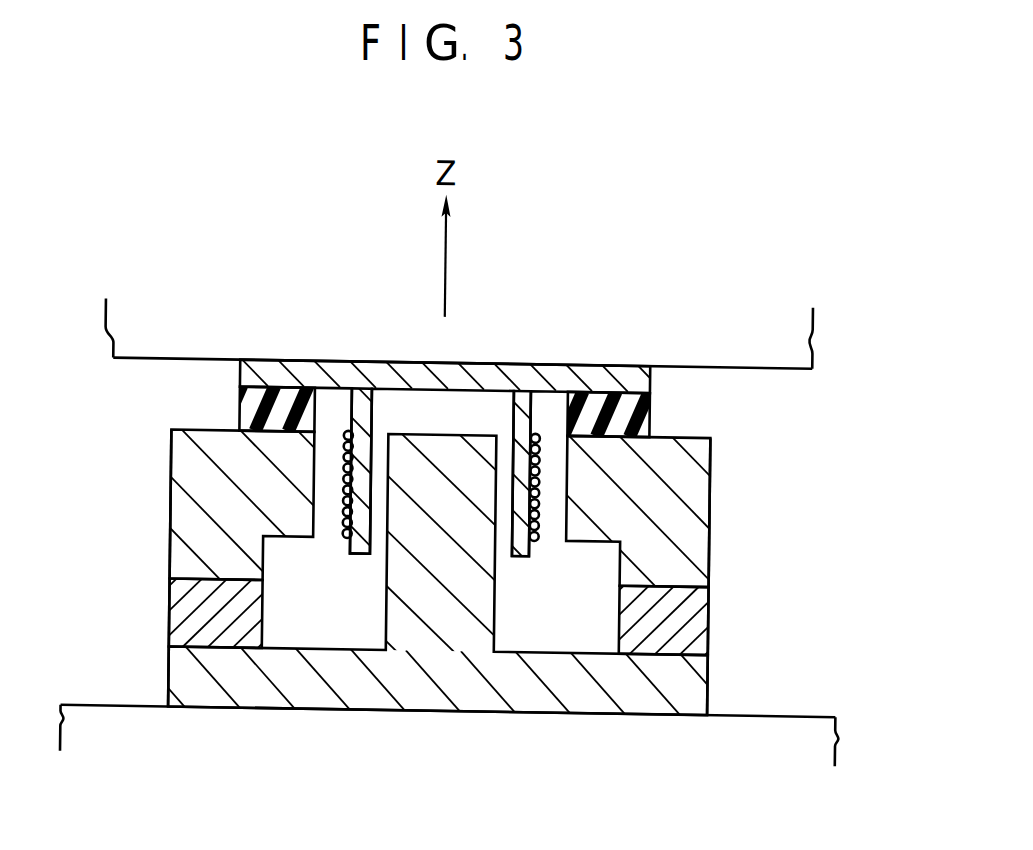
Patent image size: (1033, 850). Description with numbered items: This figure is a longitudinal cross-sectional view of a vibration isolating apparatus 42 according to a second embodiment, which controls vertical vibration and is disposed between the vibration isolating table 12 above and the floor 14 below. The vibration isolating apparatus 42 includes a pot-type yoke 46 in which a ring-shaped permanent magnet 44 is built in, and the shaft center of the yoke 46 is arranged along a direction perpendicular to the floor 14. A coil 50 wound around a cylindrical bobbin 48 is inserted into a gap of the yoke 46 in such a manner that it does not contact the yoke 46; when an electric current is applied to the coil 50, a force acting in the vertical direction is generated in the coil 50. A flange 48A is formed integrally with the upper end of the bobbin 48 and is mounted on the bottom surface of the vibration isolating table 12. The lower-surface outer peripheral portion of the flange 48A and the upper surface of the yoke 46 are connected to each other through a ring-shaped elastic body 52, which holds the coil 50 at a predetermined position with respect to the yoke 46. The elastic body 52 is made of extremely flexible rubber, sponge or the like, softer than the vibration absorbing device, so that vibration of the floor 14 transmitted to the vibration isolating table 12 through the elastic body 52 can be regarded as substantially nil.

The vibration isolating table 12 is at (121, 375).
The floor 14 is at (789, 699).
The vibration isolating apparatus 42 is at (741, 542).
The permanent magnet 44 is at (713, 618).
The yoke 46 is at (724, 478).
The bobbin 48 is at (512, 557).
The flange 48A is at (651, 395).
The coil 50 is at (535, 544).
The elastic body 52 is at (238, 403).